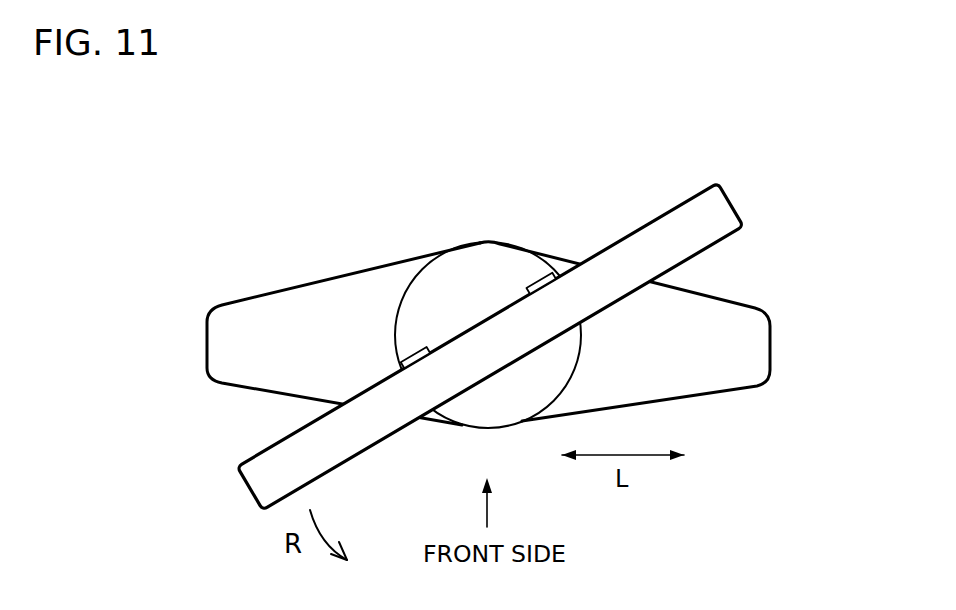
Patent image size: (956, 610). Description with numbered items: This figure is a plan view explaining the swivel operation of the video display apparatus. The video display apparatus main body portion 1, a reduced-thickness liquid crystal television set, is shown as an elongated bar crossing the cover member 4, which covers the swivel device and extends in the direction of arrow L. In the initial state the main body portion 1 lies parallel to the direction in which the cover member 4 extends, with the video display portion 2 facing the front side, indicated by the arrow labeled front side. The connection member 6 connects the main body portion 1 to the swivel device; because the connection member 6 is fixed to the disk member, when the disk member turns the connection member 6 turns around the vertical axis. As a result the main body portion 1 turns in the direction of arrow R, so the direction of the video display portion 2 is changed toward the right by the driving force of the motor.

The video display apparatus main body portion 1 is at (687, 200).
The video display portion 2 is at (627, 293).
The cover member 4 is at (269, 295).
The connection member 6 is at (401, 360).